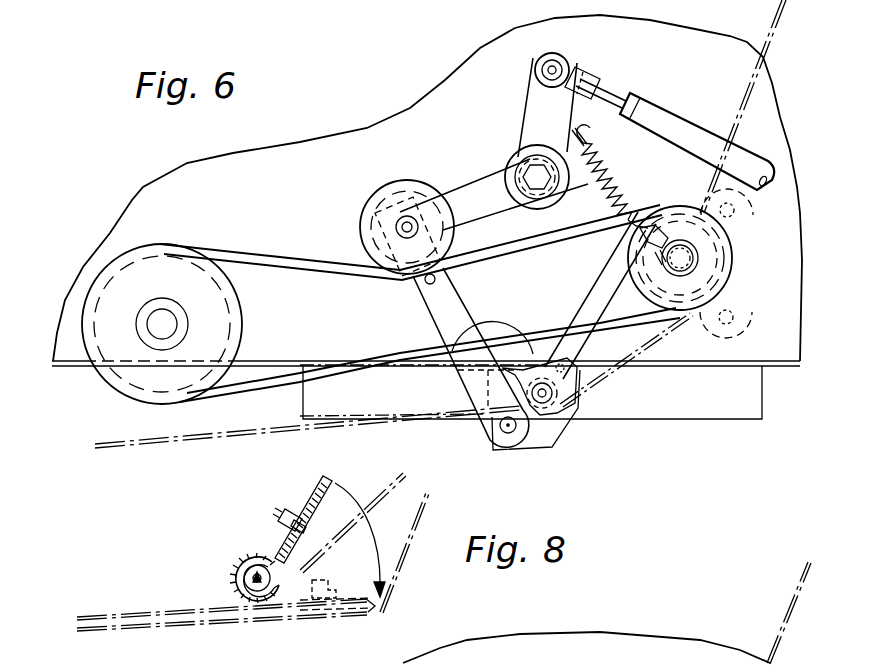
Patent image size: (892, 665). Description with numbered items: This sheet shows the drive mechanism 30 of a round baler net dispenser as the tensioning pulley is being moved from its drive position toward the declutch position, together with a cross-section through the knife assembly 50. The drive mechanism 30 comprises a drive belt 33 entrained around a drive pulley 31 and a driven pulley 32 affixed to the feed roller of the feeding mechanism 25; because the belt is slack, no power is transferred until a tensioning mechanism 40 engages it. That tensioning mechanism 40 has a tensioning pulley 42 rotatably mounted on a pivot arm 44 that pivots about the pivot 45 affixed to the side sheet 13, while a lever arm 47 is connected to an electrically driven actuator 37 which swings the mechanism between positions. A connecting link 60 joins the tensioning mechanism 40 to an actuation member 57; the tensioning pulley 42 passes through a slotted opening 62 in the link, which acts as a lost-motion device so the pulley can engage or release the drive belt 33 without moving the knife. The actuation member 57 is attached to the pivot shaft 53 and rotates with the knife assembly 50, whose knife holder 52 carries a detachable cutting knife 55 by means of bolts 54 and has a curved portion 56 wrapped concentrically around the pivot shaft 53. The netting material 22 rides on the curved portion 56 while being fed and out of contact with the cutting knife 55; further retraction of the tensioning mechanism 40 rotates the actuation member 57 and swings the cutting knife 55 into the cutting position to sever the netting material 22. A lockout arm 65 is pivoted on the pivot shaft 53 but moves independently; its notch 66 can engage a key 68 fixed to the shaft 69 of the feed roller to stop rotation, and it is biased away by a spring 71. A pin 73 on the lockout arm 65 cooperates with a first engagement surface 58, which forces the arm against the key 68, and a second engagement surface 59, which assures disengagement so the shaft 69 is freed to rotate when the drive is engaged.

In FIG. 6, the drive mechanism 30 is at (172, 163).
In FIG. 6, the side sheet 13 is at (318, 143).
In FIG. 6, the drive pulley 31 is at (107, 265).
In FIG. 6, the drive belt 33 is at (265, 253).
In FIG. 6, the tensioning pulley 42 is at (362, 212).
In FIG. 6, the pivot arm 44 is at (452, 195).
In FIG. 6, the pivot 45 is at (518, 162).
In FIG. 6, the lever arm 47 is at (538, 103).
In FIG. 6, the tensioning mechanism 40 is at (425, 135).
In FIG. 6, the actuator 37 is at (690, 135).
In FIG. 6, the spring 71 is at (600, 182).
In FIG. 6, the driven pulley 32 is at (733, 243).
In FIG. 6, the feeding mechanism 25 is at (738, 271).
In FIG. 6, the shaft 69 is at (693, 280).
In FIG. 6, the notch 66 is at (658, 233).
In FIG. 6, the key 68 is at (655, 258).
In FIG. 6, the lockout arm 65 is at (600, 280).
In FIG. 6, the slotted opening 62 is at (427, 279).
In FIG. 6, the connecting link 60 is at (452, 298).
In FIG. 6, the second engagement surface 59 is at (440, 331).
In FIG. 6, the first engagement surface 58 is at (508, 386).
In FIG. 6, the actuation member 57 is at (538, 436).
In FIG. 6, the cutting knife 55 is at (588, 383).
In FIG. 8, the cutting knife 55 is at (330, 482).
In FIG. 6, the knife assembly 50 is at (490, 420).
In FIG. 8, the knife assembly 50 is at (236, 531).
In FIG. 6, the pin 73 is at (640, 350).
In FIG. 6, the netting material 22 is at (137, 445).
In FIG. 8, the netting material 22 is at (165, 610).
In FIG. 8, the knife holder 52 is at (240, 577).
In FIG. 8, the curved portion 56 is at (245, 563).
In FIG. 8, the pivot shaft 53 is at (250, 594).
In FIG. 8, the bolts 54 is at (290, 510).